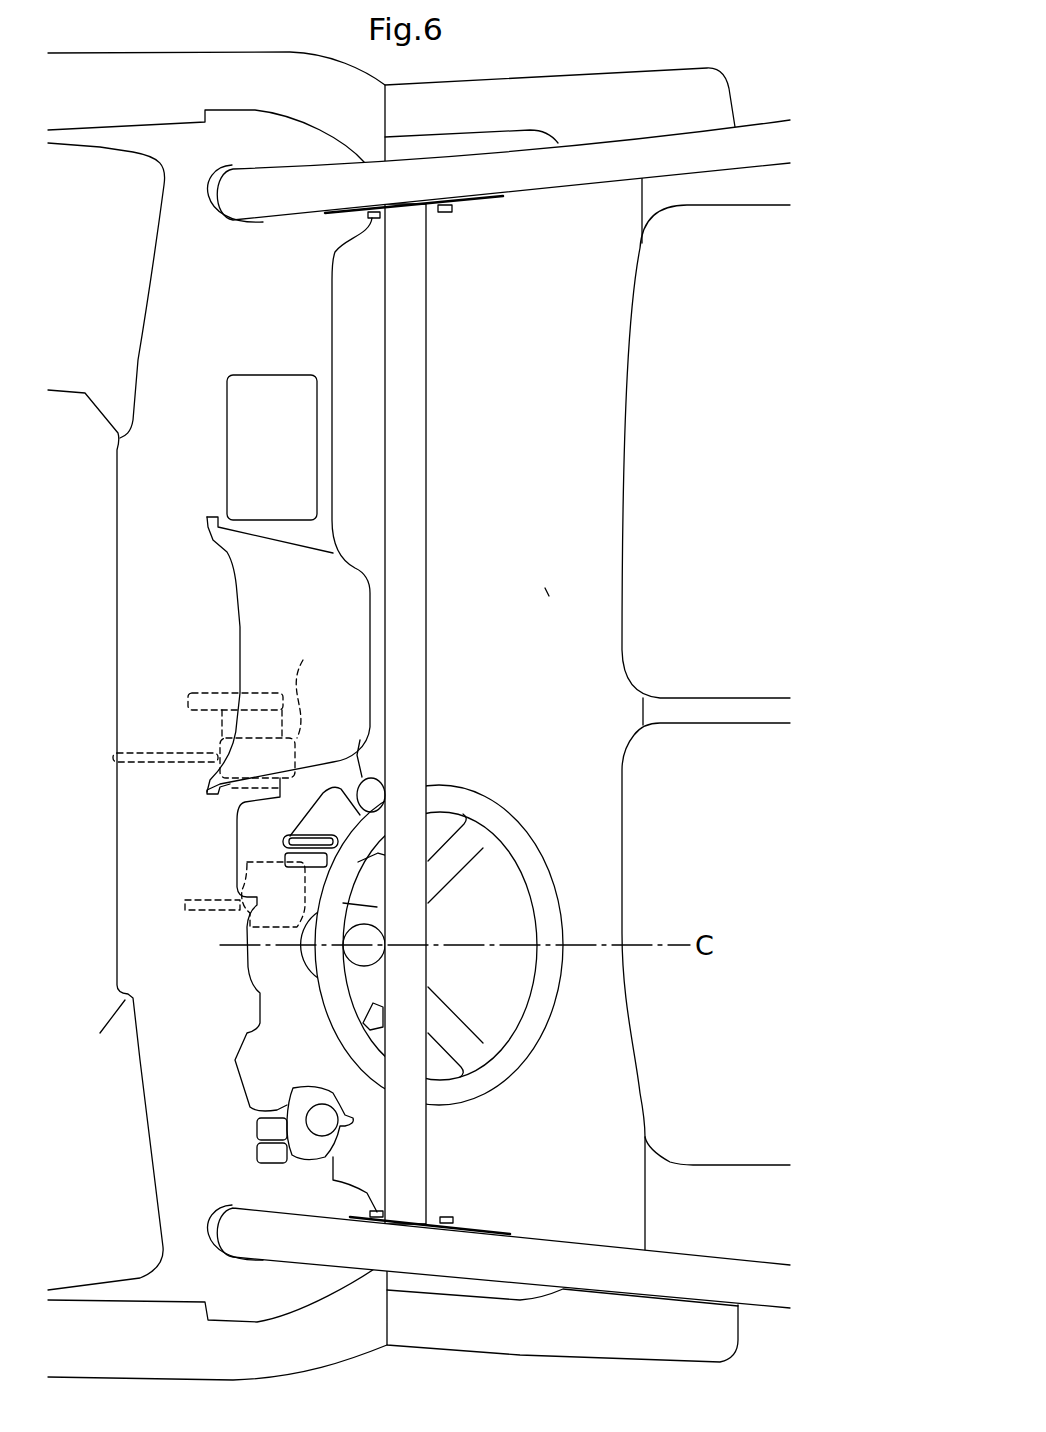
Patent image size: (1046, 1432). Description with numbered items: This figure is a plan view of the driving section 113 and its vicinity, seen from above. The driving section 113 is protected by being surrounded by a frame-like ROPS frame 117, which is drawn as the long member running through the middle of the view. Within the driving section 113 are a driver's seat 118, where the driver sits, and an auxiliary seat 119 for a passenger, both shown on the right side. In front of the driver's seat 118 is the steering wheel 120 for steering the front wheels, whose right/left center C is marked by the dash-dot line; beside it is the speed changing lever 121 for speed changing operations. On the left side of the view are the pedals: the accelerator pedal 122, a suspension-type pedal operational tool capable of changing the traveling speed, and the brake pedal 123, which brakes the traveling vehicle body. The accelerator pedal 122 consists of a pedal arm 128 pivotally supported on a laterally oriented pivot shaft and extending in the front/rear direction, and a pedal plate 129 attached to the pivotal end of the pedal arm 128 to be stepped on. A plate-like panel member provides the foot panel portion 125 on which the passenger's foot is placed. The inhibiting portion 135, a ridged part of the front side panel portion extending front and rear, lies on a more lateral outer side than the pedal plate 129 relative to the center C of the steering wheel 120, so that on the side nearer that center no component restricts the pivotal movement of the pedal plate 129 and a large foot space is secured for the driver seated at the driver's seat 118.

The driving section 113 is at (190, 1090).
The ROPS frame 117 is at (426, 450).
The driver's seat 118 is at (630, 792).
The auxiliary seat 119 is at (643, 293).
The steering wheel 120 is at (490, 806).
The speed changing lever 121 is at (373, 787).
The accelerator pedal 122 is at (297, 753).
The brake pedal 123 is at (266, 857).
The foot panel portion 125 is at (547, 592).
The pedal arm 128 is at (147, 752).
The pedal plate 129 is at (318, 683).
The inhibiting portion 135 is at (263, 692).